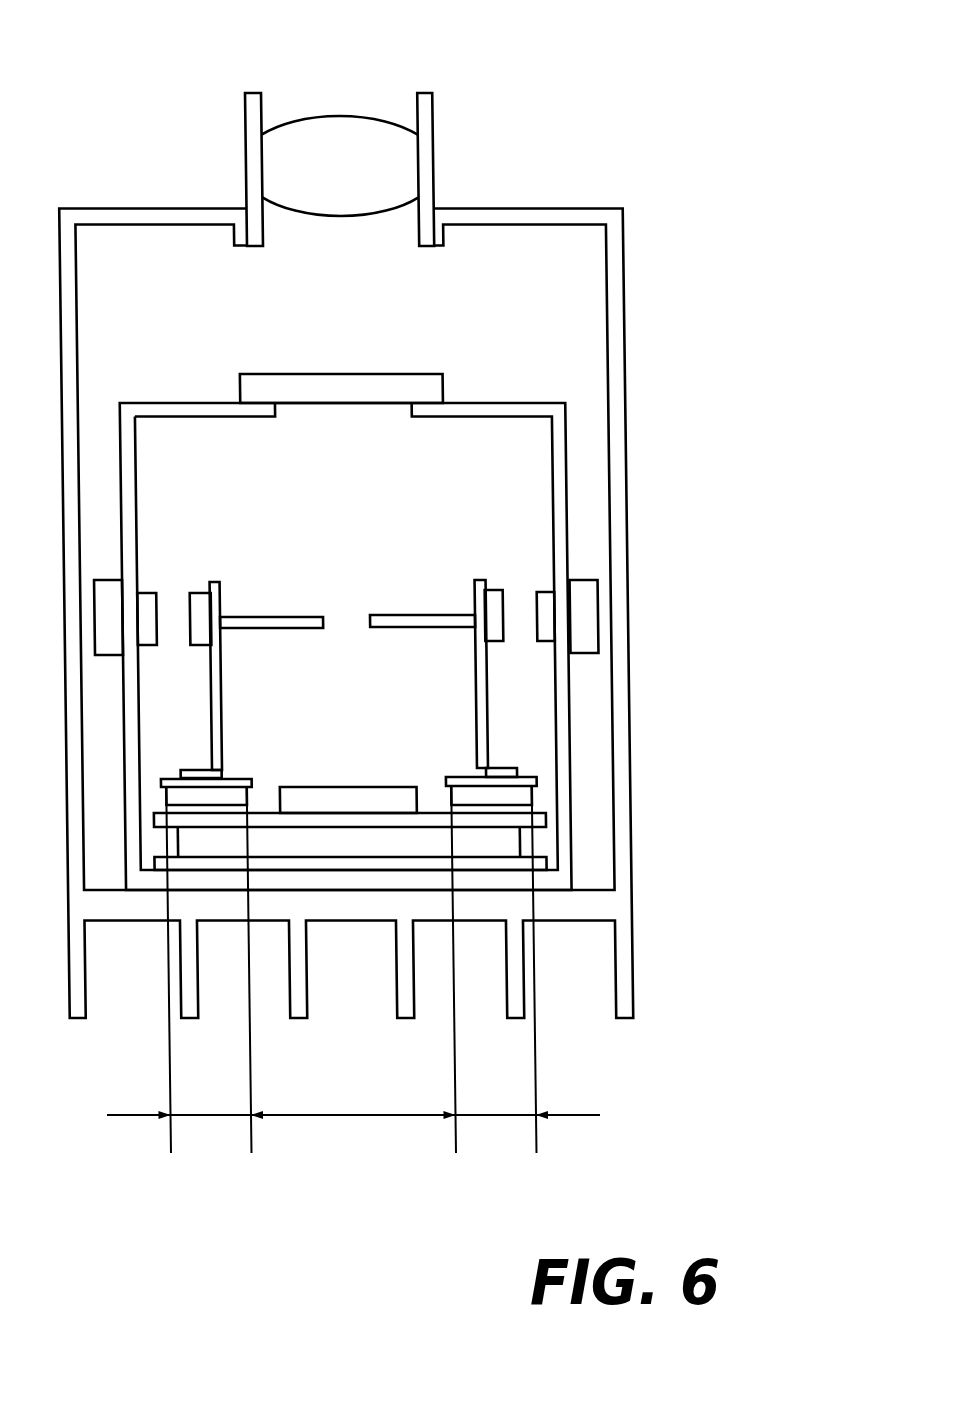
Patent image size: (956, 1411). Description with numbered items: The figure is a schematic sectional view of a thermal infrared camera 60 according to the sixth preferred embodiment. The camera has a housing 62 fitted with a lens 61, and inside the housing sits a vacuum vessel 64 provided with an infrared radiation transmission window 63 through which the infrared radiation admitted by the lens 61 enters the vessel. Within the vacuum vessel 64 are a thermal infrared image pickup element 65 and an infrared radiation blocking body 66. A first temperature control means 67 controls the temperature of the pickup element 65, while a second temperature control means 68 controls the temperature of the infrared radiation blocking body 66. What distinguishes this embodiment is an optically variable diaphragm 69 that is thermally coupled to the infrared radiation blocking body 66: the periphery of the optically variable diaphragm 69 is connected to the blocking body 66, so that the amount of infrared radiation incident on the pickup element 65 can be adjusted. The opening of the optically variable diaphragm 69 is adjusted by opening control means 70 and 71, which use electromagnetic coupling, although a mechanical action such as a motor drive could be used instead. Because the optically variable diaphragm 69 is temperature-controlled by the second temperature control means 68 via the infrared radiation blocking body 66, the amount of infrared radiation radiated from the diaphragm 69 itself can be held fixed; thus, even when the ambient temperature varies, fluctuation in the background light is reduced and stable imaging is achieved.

The thermal infrared camera 60 is at (528, 126).
The lens 61 is at (395, 157).
The housing 62 is at (627, 296).
The infrared radiation transmission window 63 is at (420, 383).
The vacuum vessel 64 is at (560, 468).
The thermal infrared image pickup element 65 is at (360, 785).
The infrared radiation blocking body 66 is at (487, 727).
The first temperature control means 67 is at (365, 1112).
The second temperature control means 68 is at (502, 1113).
The optically variable diaphragm 69 is at (413, 615).
The opening control means 70 is at (492, 598).
The opening control means 71 is at (545, 622).